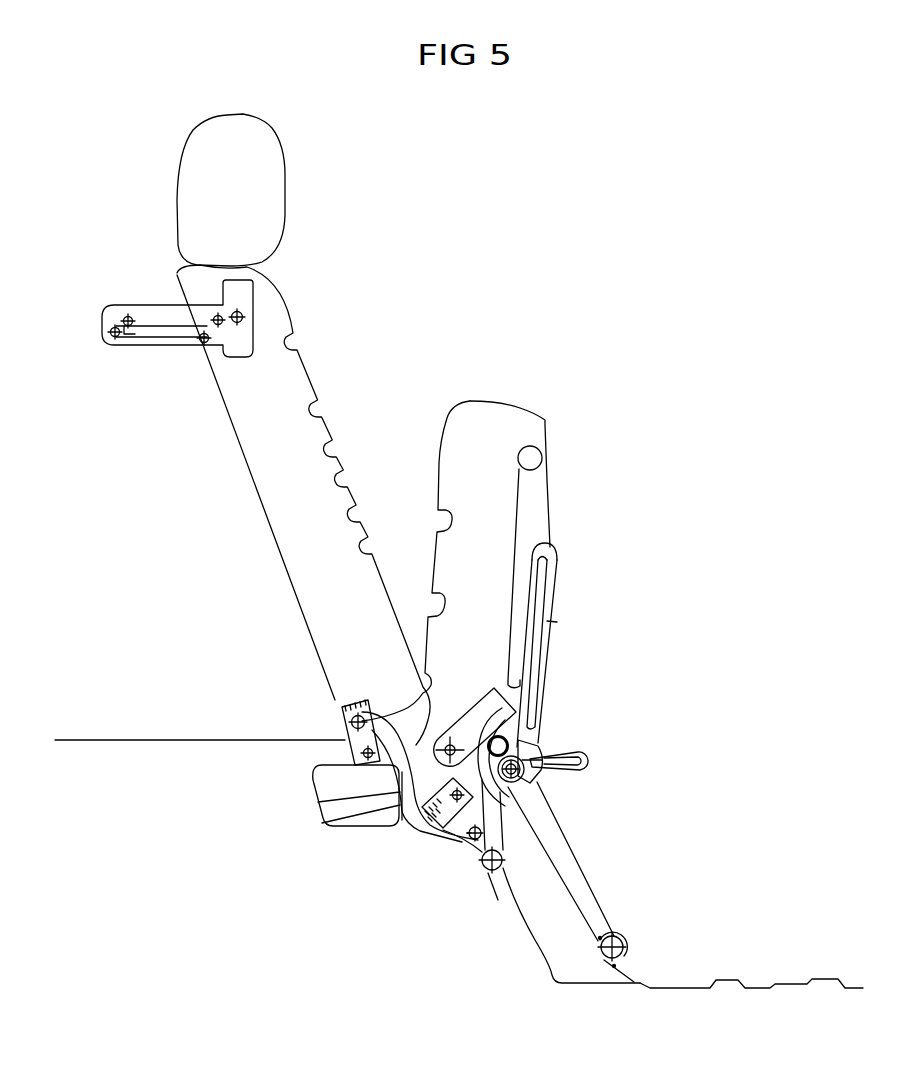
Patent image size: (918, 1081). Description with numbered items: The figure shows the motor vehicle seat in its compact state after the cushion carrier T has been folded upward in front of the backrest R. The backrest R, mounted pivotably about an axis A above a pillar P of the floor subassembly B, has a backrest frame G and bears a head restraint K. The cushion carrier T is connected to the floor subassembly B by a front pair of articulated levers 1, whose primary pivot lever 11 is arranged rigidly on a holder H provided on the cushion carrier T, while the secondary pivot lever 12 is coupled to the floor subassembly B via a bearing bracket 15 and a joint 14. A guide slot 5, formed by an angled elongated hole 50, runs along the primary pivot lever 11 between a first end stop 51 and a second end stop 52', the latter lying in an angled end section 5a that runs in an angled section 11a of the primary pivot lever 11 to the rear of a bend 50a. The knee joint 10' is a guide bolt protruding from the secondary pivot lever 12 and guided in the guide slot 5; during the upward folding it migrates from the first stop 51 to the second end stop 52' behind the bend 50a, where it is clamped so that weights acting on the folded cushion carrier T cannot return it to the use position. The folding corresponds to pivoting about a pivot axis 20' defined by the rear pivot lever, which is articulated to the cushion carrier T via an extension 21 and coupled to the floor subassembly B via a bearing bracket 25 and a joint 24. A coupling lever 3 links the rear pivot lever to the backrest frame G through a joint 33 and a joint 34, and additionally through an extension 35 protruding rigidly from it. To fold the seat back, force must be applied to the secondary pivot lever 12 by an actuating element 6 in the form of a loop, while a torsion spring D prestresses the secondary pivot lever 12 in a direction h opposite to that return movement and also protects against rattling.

The head restraint K is at (197, 170).
The backrest frame G is at (283, 377).
The backrest R is at (235, 442).
The cushion carrier T is at (546, 426).
The holder H is at (536, 487).
The first end stop 51 is at (558, 550).
The guide slot 5 is at (557, 622).
The primary pivot lever 11 is at (548, 663).
The angled elongated hole 50 is at (530, 712).
The bend 50a is at (510, 693).
The pivot pin 52' is at (556, 794).
The angled end section 5a is at (537, 778).
The angled section 11a is at (523, 777).
The actuating element 6 is at (588, 758).
The extension 21 is at (500, 720).
The pivot axis 20' is at (407, 607).
The secondary pivot lever 12 is at (577, 885).
The front pair of articulated levers 1 is at (590, 848).
The torsion spring D is at (628, 962).
The direction h is at (594, 926).
The knee joint guide element 10' is at (541, 881).
The bearing bracket 15 is at (569, 962).
The joint 14 is at (606, 958).
The floor subassembly B is at (772, 983).
The bearing bracket 25 is at (497, 880).
The joint 24 is at (483, 870).
The joint 34 is at (462, 842).
The coupling lever 3 is at (413, 833).
The extension 35 is at (322, 823).
The pillar P is at (318, 802).
The axis A is at (343, 752).
The joint 33 is at (343, 720).